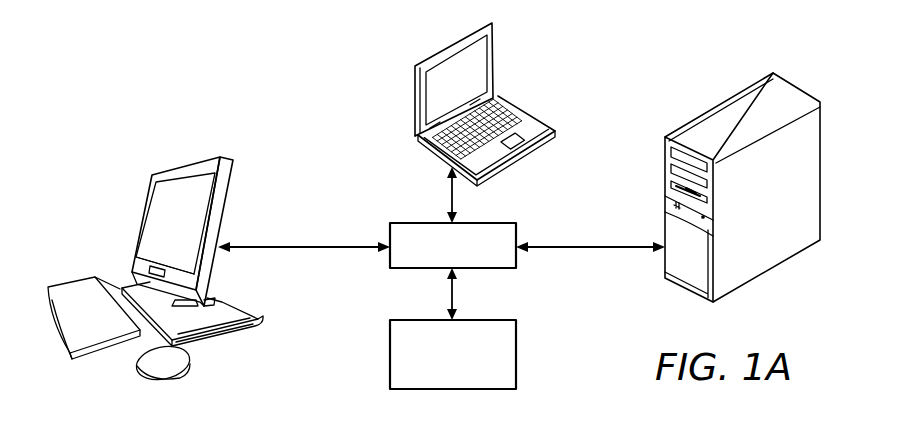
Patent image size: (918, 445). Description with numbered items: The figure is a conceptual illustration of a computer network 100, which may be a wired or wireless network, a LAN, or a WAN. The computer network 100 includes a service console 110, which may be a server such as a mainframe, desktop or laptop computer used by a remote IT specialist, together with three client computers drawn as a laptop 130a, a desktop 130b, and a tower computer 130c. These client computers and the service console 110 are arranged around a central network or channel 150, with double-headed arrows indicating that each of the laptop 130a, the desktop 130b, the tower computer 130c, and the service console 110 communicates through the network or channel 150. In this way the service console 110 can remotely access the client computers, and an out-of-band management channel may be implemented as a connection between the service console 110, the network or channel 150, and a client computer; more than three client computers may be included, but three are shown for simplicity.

The computer network 100 is at (230, 62).
The service console 110 is at (390, 348).
The network or channel 150 is at (410, 223).
The laptop 130a is at (525, 118).
The desktop 130b is at (143, 222).
The tower computer 130c is at (793, 260).